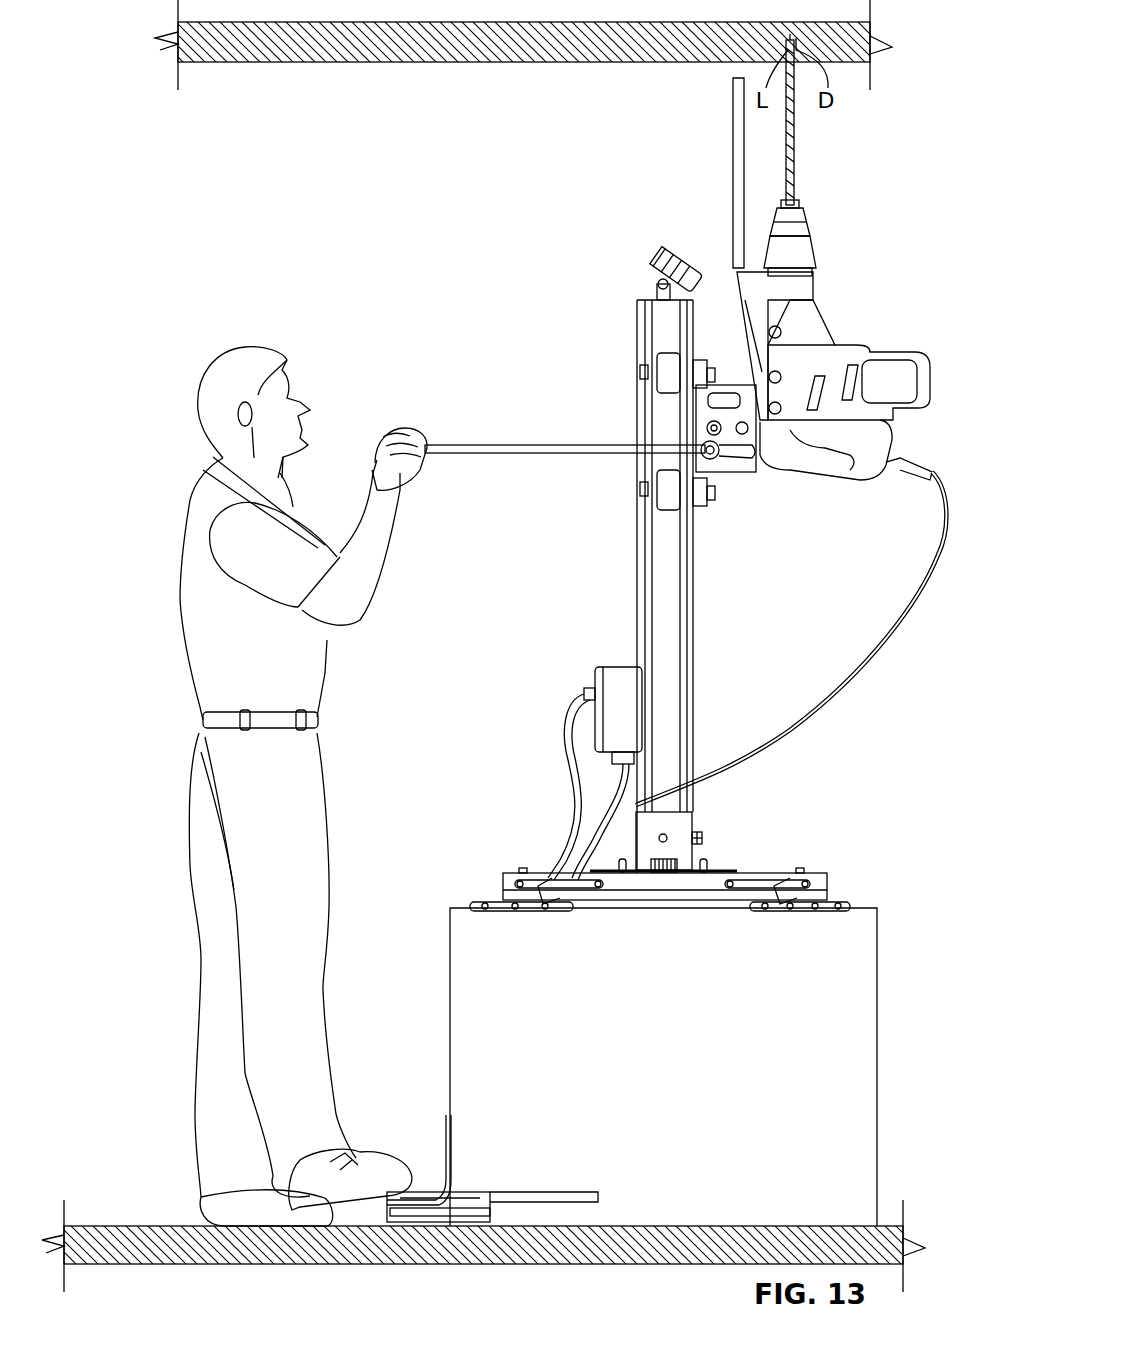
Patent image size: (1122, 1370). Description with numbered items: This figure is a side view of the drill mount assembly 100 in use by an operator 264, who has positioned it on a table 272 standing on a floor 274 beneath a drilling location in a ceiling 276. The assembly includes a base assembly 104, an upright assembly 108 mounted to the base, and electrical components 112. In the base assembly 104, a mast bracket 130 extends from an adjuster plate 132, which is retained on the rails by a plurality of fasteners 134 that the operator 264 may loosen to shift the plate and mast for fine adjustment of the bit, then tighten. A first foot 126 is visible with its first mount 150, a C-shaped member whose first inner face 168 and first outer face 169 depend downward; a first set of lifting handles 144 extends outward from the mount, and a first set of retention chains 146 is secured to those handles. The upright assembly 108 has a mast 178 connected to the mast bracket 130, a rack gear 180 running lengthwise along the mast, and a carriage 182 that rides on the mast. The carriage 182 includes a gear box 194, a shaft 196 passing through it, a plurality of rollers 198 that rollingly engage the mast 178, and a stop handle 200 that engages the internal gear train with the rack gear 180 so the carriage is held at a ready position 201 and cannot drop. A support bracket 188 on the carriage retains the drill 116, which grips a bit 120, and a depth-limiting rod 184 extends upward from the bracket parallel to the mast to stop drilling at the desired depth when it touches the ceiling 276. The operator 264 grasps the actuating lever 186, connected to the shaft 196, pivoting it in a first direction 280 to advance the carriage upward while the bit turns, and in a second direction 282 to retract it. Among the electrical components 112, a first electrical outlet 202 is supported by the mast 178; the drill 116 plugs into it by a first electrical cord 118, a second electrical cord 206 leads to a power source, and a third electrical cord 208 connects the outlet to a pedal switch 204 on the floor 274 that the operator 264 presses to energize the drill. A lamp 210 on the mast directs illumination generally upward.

The ceiling 276 is at (255, 65).
The floor 274 is at (832, 1226).
The table 272 is at (642, 1080).
The bit 120 is at (795, 185).
The drill 116 is at (812, 252).
The depth-limiting rod 184 is at (733, 112).
The support bracket 188 is at (765, 320).
The carriage 182 is at (800, 470).
The first electrical cord 118 is at (912, 478).
The gear box 194 is at (722, 402).
The shaft 196 is at (718, 462).
The actuating lever 186 is at (450, 445).
The rack gear 180 is at (695, 672).
The mast 178 is at (665, 332).
The plurality of rollers 198 is at (665, 492).
The stop handle 200 is at (632, 447).
The lamp 210 is at (660, 252).
The mast bracket 130 is at (688, 822).
The plurality of fasteners 134 is at (680, 860).
The base assembly 104 is at (848, 868).
The adjuster plate 132 is at (760, 880).
The first foot 126 is at (800, 878).
The first set of retention chains 146 is at (490, 903).
The first set of lifting handles 144 is at (755, 885).
The first outer face 169 is at (820, 885).
The first inner face 168 is at (622, 900).
The first mount 150 is at (668, 884).
The first electrical outlet 202 is at (595, 680).
The third electrical cord 208 is at (598, 815).
The second electrical cord 206 is at (560, 855).
The pedal switch 204 is at (400, 1215).
The electrical components 112 is at (420, 1130).
The operator 264 is at (300, 560).
The upright assembly 108 is at (862, 195).
The drill mount assembly 100 is at (870, 125).
The ready position 201 is at (868, 270).
The second direction 282 is at (463, 285).
The first direction 280 is at (508, 292).